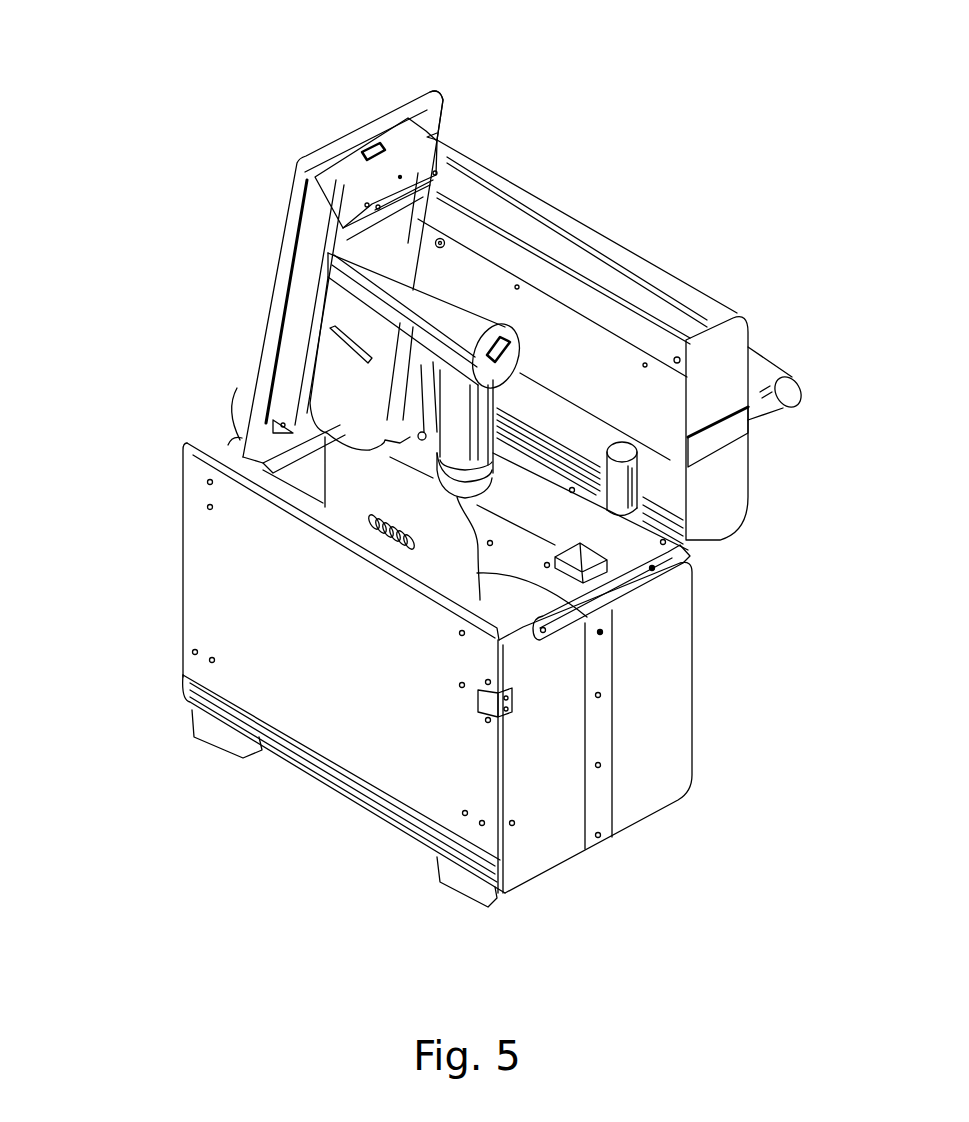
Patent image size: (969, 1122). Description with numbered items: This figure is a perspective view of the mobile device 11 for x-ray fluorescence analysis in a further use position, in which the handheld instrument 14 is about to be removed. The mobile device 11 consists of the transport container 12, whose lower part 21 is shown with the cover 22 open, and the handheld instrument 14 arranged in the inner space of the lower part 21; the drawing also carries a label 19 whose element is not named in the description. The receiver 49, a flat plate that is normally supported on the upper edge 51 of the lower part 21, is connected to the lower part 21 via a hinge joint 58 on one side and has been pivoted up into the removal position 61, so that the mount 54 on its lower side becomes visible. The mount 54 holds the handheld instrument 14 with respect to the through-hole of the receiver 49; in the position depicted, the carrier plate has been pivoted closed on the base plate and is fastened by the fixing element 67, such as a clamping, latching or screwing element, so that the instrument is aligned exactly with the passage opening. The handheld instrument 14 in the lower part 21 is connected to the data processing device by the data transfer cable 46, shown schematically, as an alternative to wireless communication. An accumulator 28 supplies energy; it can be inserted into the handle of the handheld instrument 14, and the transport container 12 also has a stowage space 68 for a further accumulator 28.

The mobile device 11 is at (665, 172).
The transport container 12 is at (145, 575).
The handheld instrument 14 is at (476, 253).
The dispenser 19 is at (536, 340).
The lower part 21 is at (693, 735).
The cover 22 is at (700, 288).
The accumulator 28 is at (623, 477).
The data transfer cable 46 is at (600, 632).
The receiver 49 is at (427, 88).
The upper edge 51 is at (593, 587).
The mount 54 is at (456, 83).
The hinge joint 58 is at (258, 455).
The removal position 61 is at (230, 262).
The fixing element 67 is at (372, 148).
The stowage space 68 is at (587, 560).